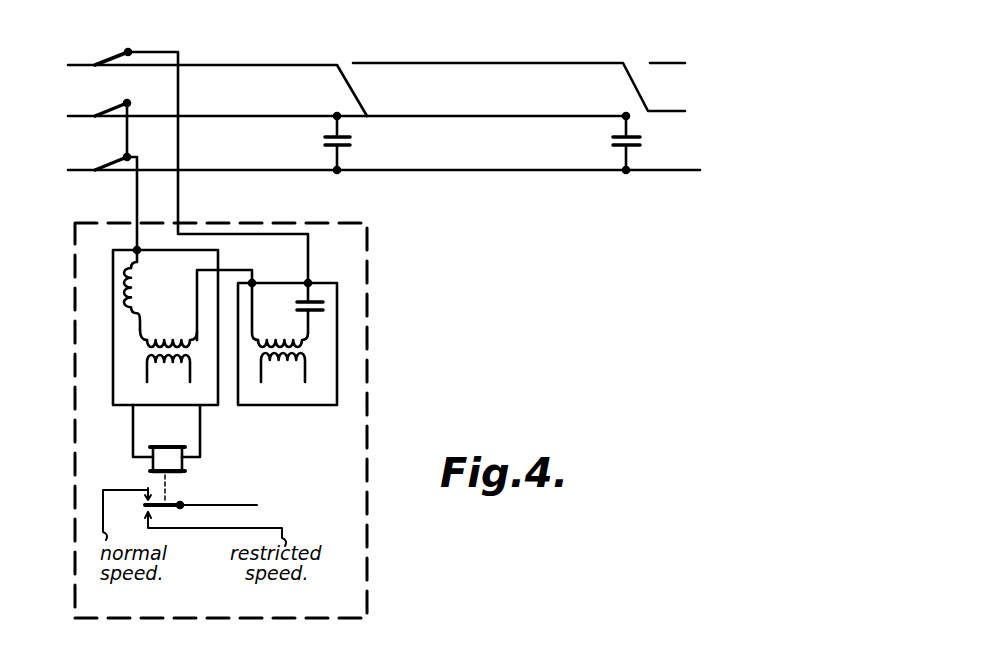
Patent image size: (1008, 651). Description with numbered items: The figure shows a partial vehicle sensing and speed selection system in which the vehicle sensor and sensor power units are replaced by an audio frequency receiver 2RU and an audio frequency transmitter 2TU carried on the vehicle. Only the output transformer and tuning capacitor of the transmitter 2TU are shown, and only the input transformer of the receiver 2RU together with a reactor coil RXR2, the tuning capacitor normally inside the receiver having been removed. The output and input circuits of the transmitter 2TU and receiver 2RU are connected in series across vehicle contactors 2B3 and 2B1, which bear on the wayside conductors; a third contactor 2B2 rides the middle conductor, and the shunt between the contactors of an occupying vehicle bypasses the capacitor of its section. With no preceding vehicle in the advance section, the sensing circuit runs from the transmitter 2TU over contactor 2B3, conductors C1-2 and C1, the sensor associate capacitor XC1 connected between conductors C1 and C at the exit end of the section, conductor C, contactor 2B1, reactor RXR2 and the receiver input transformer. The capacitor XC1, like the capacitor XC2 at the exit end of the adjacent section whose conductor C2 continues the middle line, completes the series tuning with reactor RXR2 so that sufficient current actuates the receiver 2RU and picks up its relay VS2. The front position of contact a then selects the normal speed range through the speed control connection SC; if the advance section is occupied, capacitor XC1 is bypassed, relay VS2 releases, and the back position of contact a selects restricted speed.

The vehicle contactor 2B3 is at (114, 50).
The vehicle contactor 2B2 is at (114, 108).
The vehicle contactor 2B1 is at (112, 164).
The conductor C1-2 is at (296, 60).
The conductor C2 is at (294, 111).
The conductor C1 is at (606, 109).
The conductor C is at (280, 152).
The sensor associate capacitor XC2 is at (351, 140).
The sensor associate capacitor XC1 is at (641, 140).
The reactor coil RXR2 is at (160, 275).
The audio frequency receiver 2RU is at (182, 353).
The audio frequency transmitter 2TU is at (287, 342).
The receiver relay VS2 is at (162, 461).
The contact a is at (175, 502).
The speed control connection SC is at (246, 503).